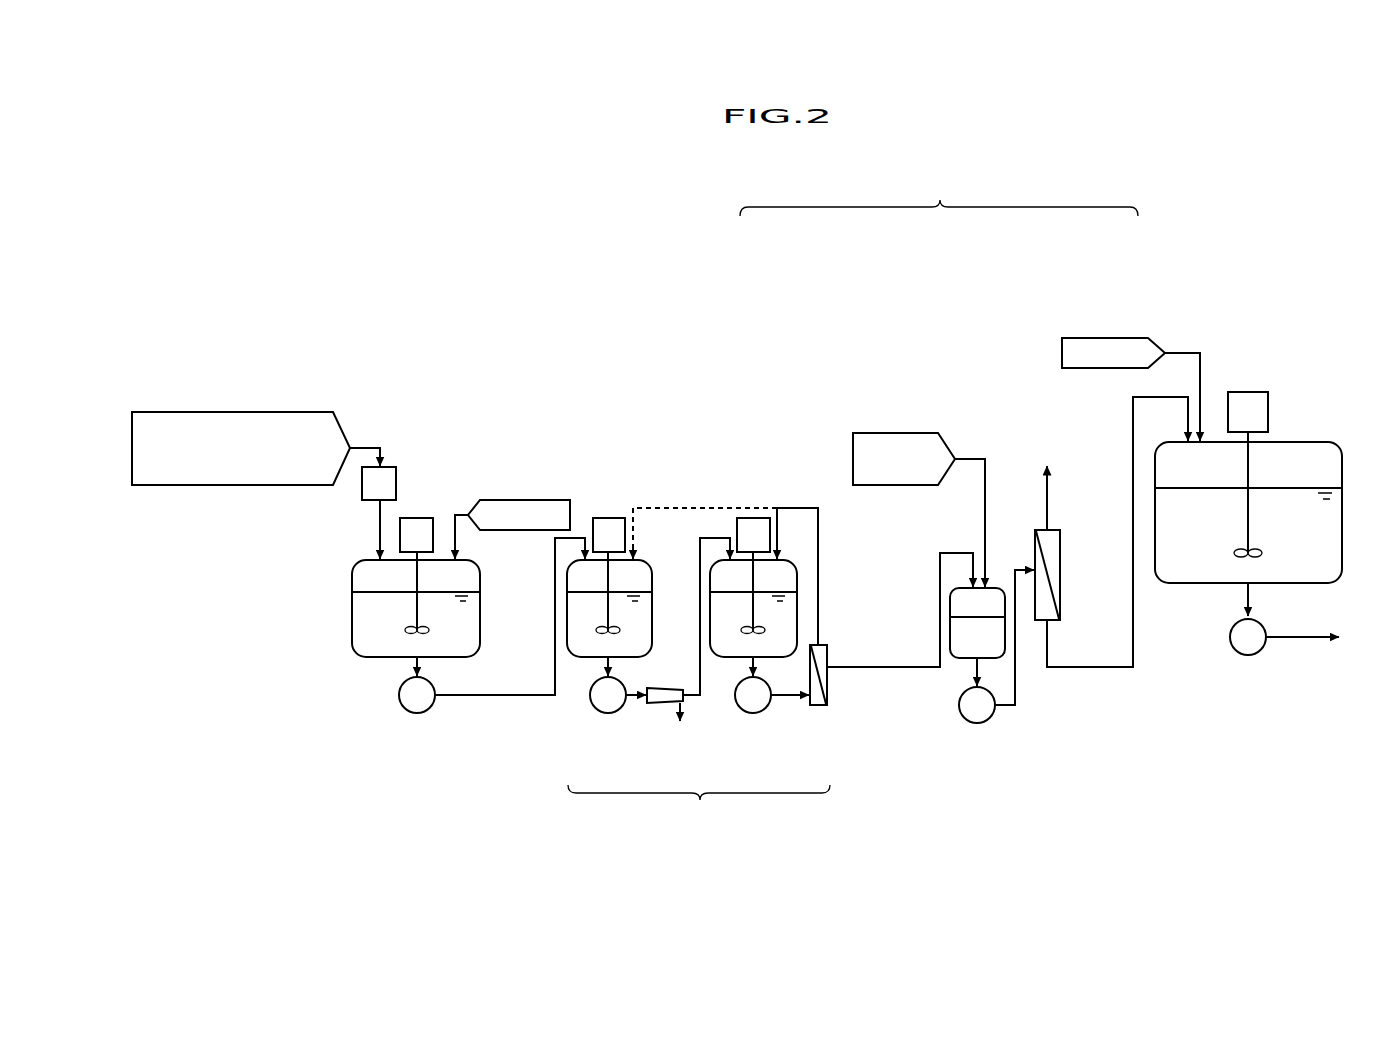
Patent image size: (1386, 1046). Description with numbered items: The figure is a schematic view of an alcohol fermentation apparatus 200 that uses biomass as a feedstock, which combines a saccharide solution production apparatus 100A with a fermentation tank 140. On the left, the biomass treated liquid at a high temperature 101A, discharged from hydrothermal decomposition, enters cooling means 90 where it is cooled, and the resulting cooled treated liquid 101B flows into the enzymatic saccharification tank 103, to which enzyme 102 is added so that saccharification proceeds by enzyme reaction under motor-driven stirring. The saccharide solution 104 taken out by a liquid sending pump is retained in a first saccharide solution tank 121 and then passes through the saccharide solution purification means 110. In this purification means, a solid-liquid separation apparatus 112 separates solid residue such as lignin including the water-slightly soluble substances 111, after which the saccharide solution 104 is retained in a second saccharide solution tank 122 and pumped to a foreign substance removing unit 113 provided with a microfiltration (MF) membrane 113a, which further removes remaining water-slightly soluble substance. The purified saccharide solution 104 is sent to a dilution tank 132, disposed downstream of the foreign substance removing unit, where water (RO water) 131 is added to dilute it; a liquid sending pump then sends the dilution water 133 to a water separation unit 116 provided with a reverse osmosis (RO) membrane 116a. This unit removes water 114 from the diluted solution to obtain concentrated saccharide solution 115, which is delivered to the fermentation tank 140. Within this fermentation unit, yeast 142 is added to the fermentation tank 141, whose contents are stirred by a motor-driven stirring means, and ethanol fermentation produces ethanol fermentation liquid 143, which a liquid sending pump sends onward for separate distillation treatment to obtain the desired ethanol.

The alcohol fermentation apparatus 200 is at (939, 195).
The saccharide solution production apparatus 100A is at (761, 288).
The fermentation tank 140 is at (1136, 274).
The yeast 142 is at (1098, 338).
The water (RO water) 131 is at (882, 433).
The dilution tank 132 is at (963, 587).
The dilution water 133 is at (1018, 695).
The biomass treated liquid at a high temperature 101A is at (256, 412).
The cooling means 90 is at (398, 488).
The cooled treated liquid 101B is at (378, 530).
The enzyme 102 is at (523, 531).
The enzymatic saccharification tank 103 is at (379, 658).
The saccharide solution 104 is at (521, 694).
The first saccharide solution tank 121 is at (650, 553).
The second saccharide solution tank 122 is at (790, 560).
The saccharide solution purification means 110 is at (699, 807).
The water-slightly soluble substances 111 is at (688, 710).
The solid-liquid separation apparatus 112 is at (659, 717).
The foreign substance removing unit 113 is at (819, 718).
The microfiltration (MF) membrane 113a is at (828, 695).
The water 114 is at (1045, 505).
The concentrated saccharide solution 115 is at (1076, 667).
The water separation unit 116 is at (1071, 600).
The reverse osmosis (RO) membrane 116a is at (1050, 570).
The fermentation tank 141 is at (1206, 584).
The ethanol fermentation liquid 143 is at (1301, 640).